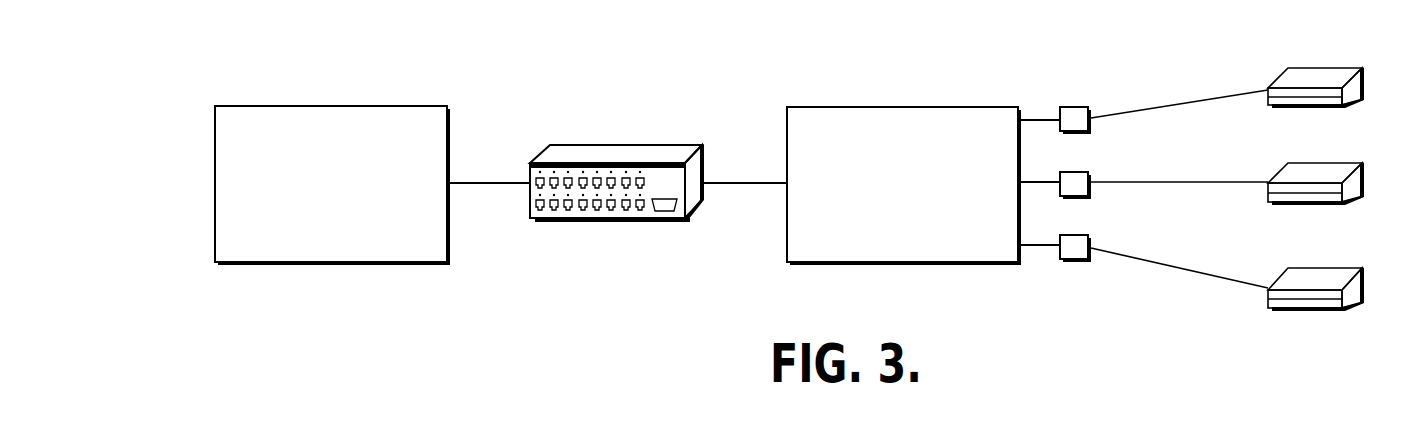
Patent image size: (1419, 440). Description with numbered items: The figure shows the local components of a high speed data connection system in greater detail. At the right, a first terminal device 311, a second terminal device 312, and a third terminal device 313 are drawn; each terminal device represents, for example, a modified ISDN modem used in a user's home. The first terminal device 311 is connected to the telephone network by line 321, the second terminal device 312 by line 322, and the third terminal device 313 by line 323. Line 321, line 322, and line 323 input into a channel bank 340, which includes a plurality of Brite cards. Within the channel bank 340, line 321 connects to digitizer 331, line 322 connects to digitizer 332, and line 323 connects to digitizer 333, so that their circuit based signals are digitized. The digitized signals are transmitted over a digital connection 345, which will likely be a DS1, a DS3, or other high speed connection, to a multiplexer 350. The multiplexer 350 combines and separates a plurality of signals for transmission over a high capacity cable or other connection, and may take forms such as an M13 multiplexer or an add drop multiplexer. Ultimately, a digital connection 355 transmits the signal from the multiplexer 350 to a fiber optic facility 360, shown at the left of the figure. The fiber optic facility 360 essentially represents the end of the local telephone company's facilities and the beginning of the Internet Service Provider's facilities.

The first terminal device 311 is at (1277, 106).
The second terminal device 312 is at (1345, 202).
The third terminal device 313 is at (1313, 318).
The line 321 is at (1243, 90).
The line 322 is at (1215, 184).
The line 323 is at (1210, 277).
The digitizer 331 is at (1072, 107).
The digitizer 332 is at (1072, 172).
The digitizer 333 is at (1078, 262).
The channel bank 340 is at (818, 265).
The digital connection 345 is at (770, 182).
The multiplexer 350 is at (635, 224).
The digital connection 355 is at (516, 187).
The fiber optic facility 360 is at (215, 125).